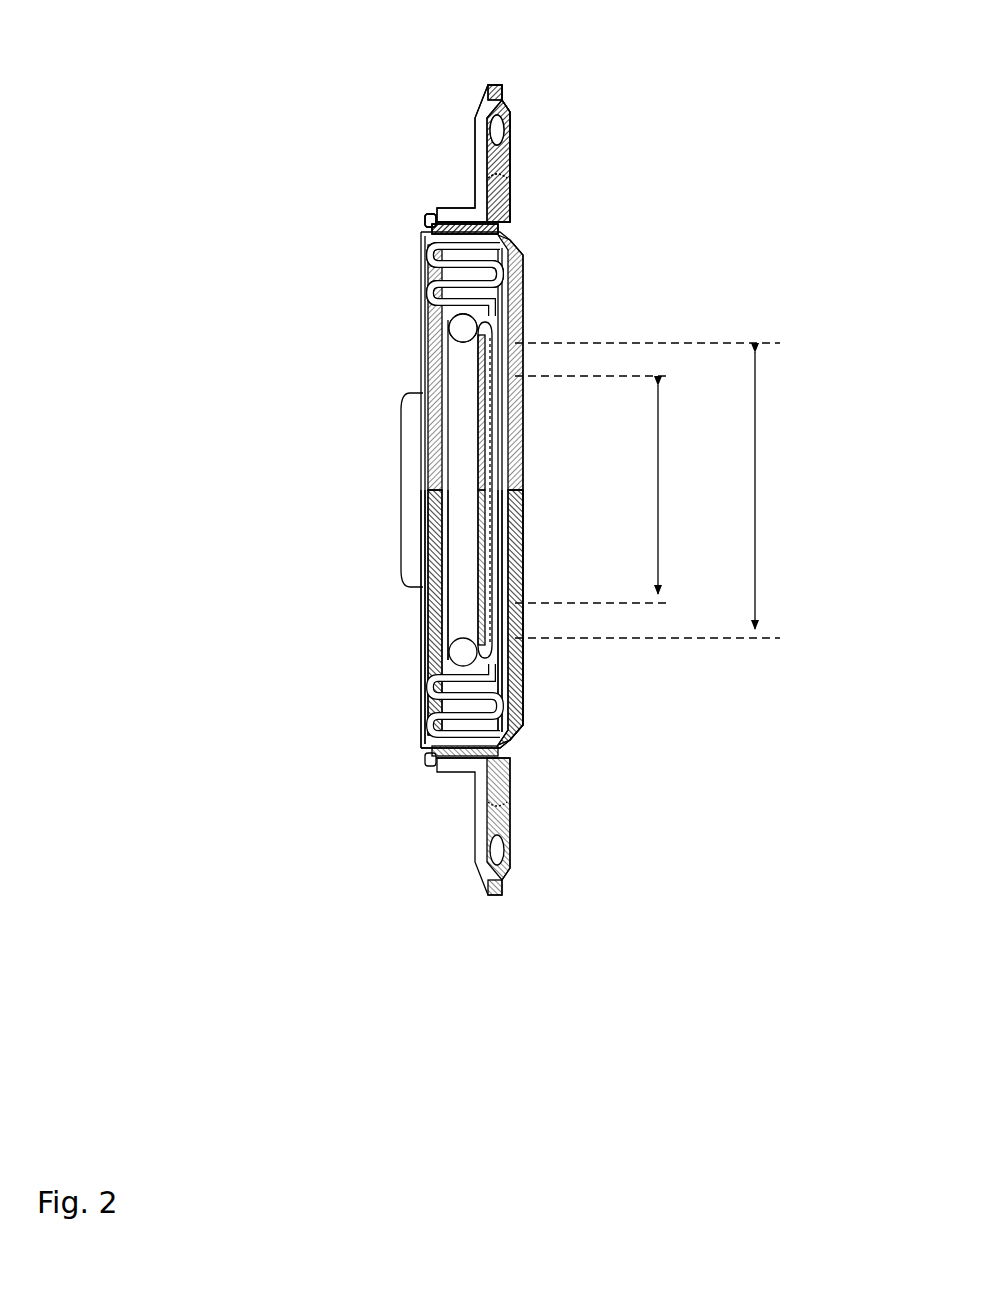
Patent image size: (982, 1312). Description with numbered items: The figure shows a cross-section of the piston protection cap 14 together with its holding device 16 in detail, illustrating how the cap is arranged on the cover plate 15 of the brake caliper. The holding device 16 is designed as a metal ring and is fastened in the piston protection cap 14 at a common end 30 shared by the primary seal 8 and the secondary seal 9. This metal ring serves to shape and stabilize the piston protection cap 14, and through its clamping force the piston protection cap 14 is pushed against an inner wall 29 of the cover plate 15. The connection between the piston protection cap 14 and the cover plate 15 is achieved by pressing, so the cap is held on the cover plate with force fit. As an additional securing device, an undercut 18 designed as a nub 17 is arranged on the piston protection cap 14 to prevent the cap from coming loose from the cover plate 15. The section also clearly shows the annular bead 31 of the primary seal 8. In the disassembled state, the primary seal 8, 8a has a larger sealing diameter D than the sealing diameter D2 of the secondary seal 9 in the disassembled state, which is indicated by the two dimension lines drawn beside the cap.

The primary seal 8 is at (430, 298).
The bellows fold 8a is at (325, 359).
The secondary seal 9 is at (515, 247).
The piston protection cap 14 is at (372, 236).
The cover plate 15 is at (487, 92).
The holding device 16 is at (422, 220).
The nub 17 is at (510, 218).
The undercut 18 is at (563, 197).
The inner wall 29 is at (430, 740).
The common end 30 is at (425, 243).
The annular bead 31 is at (520, 330).
The sealing diameter D is at (757, 510).
The sealing diameter D2 is at (660, 476).